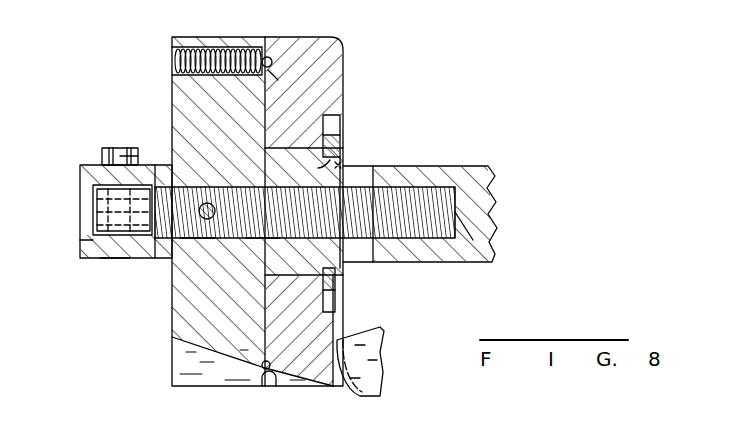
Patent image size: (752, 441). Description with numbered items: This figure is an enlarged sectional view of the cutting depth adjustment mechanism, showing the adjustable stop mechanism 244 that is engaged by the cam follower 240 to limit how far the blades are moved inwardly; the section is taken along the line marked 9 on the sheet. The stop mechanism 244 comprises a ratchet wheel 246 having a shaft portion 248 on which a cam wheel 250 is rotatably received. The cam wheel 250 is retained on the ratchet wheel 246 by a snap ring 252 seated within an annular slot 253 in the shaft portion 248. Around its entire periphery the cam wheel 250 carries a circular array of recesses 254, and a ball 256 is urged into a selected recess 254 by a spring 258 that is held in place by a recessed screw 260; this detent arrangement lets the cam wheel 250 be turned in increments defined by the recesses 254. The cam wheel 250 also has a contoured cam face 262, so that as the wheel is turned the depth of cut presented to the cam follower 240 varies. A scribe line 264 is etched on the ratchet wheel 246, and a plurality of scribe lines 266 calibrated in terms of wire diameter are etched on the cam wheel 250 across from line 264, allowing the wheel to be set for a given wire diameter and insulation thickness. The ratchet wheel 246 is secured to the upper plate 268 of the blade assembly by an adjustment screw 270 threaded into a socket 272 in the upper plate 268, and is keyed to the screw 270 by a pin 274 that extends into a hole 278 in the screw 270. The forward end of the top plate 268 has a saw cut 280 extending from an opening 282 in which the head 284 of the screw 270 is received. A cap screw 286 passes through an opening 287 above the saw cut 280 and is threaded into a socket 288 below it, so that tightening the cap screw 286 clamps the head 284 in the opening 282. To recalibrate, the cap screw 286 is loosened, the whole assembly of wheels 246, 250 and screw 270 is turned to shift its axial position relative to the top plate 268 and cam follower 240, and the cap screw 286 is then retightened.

The section line 9- 9 is at (124, 12).
The cam follower 240 is at (370, 331).
The adjustable stop mechanism 244 is at (362, 77).
The ratchet wheel 246 is at (172, 78).
The shaft portion 248 is at (338, 165).
The cam wheel 250 is at (310, 42).
The snap ring 252 is at (337, 135).
The annular slot 253 is at (304, 171).
The recesses 254 is at (273, 63).
The ball 256 is at (278, 80).
The spring 258 is at (227, 47).
The recessed screw 260 is at (178, 47).
The cam face 262 is at (338, 338).
The scribe line 264 is at (258, 376).
The scribe lines 266 is at (272, 386).
The upper plate 268 is at (467, 146).
The adjustment screw 270 is at (257, 238).
The socket 272 is at (456, 212).
The pin 274 is at (195, 238).
The hole 278 is at (214, 203).
The saw cut 280 is at (92, 211).
The opening 282 is at (85, 245).
The head 284 is at (92, 192).
The cap screw 286 is at (115, 148).
The opening 287 is at (127, 160).
The socket 288 is at (113, 258).